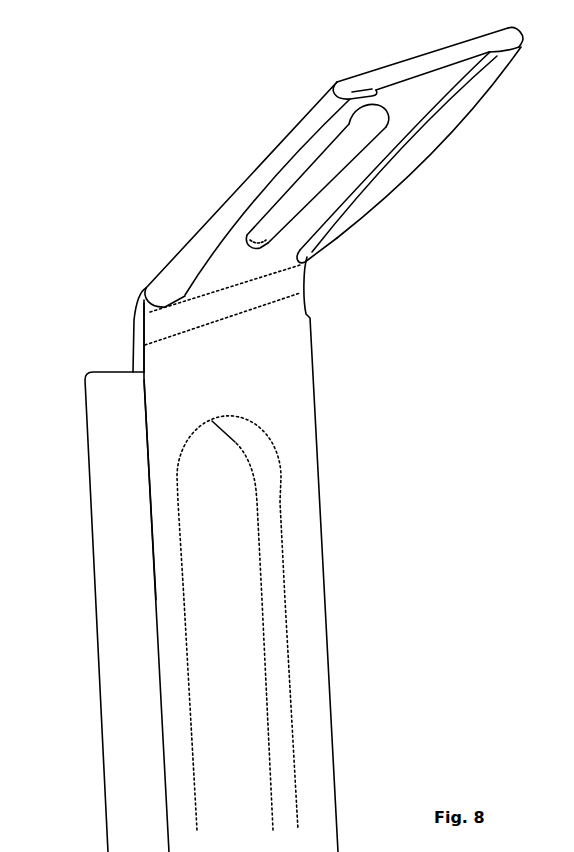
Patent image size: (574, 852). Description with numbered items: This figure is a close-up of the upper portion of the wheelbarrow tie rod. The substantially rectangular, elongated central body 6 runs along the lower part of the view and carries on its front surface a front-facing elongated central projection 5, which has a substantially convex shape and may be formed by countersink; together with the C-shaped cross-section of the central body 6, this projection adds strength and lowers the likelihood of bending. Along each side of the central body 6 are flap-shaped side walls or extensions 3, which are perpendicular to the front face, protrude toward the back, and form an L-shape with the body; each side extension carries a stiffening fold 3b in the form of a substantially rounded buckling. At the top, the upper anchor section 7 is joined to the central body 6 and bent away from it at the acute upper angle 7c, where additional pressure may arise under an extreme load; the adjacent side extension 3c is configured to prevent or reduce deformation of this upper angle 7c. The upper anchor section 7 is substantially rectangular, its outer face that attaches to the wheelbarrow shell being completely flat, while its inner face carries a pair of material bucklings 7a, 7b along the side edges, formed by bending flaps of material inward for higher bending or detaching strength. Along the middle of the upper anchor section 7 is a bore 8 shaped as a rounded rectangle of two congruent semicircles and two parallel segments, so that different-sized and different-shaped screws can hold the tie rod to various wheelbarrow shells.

The side walls or extensions 3 is at (229, 554).
The stiffening fold 3b is at (136, 466).
The side extension 3c is at (97, 388).
The central projection 5 is at (278, 532).
The central body 6 is at (304, 391).
The upper anchor section 7 is at (314, 164).
The material buckling 7a is at (444, 150).
The material buckling 7b is at (212, 245).
The upper angle 7c is at (149, 322).
The bore 8 is at (324, 192).